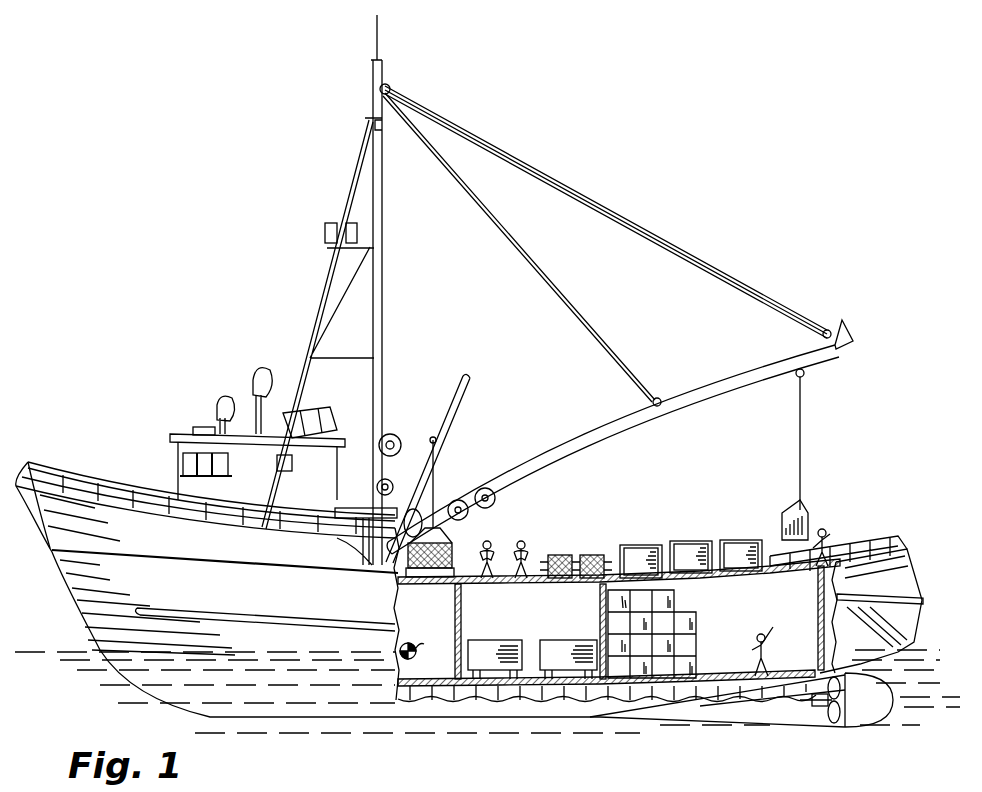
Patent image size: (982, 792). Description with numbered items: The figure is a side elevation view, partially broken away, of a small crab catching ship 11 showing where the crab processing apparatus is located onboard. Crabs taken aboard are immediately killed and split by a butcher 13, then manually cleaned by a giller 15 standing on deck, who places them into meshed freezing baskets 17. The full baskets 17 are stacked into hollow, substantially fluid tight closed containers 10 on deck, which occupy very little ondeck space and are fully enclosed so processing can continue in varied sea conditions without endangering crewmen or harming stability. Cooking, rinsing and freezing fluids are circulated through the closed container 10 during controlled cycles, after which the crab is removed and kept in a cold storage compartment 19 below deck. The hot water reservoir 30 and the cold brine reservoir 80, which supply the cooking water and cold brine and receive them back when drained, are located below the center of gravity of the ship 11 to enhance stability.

The closed container 10 is at (637, 544).
The crab catching ship 11 is at (855, 525).
The butcher 13 is at (489, 541).
The giller 15 is at (524, 541).
The meshed freezing baskets 17 is at (556, 553).
The cold storage compartment 19 is at (741, 641).
The hot water reservoir 30 is at (490, 658).
The cold brine reservoir 80 is at (568, 658).